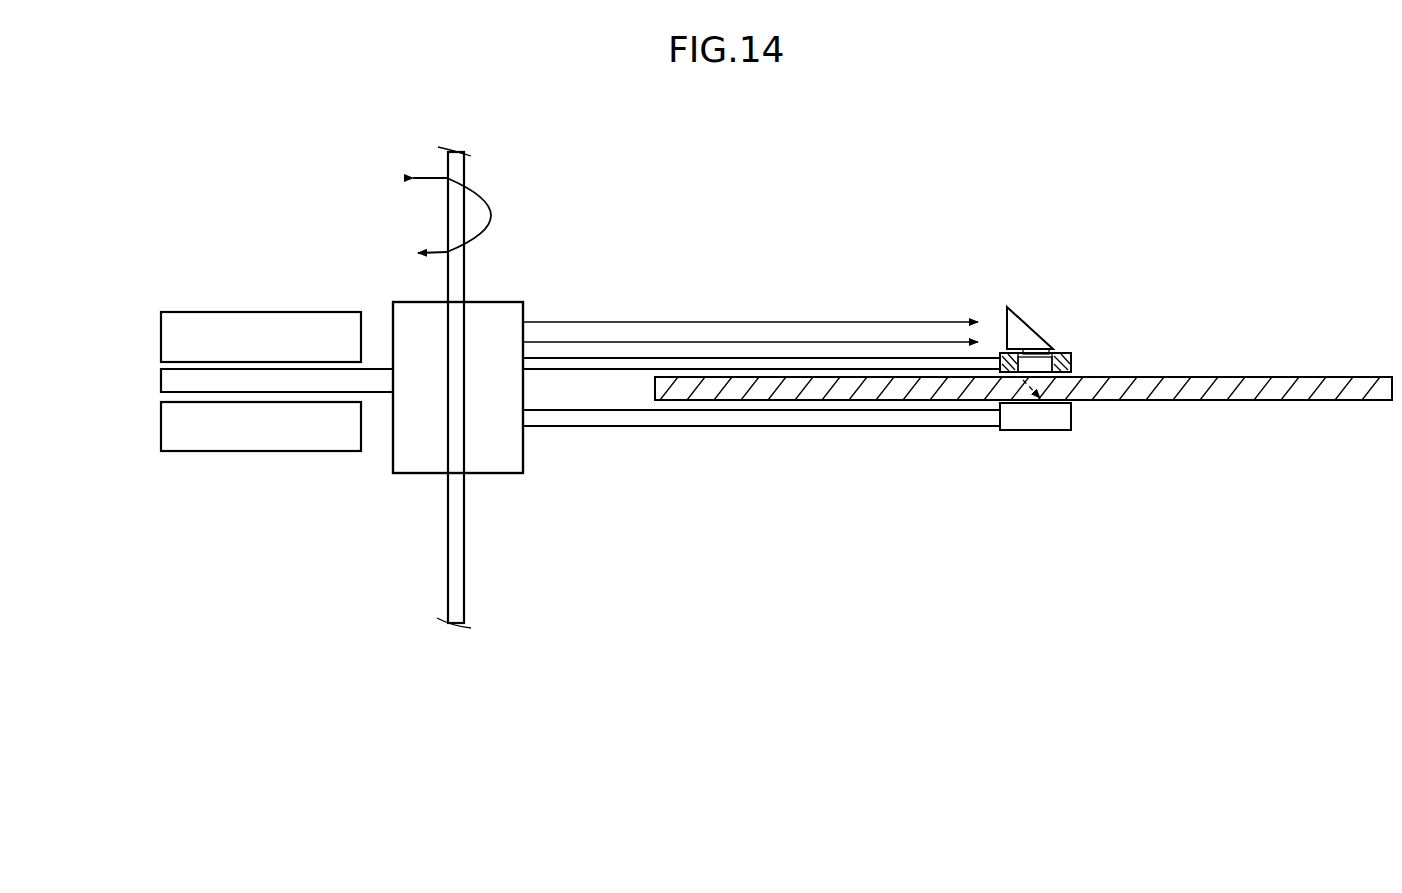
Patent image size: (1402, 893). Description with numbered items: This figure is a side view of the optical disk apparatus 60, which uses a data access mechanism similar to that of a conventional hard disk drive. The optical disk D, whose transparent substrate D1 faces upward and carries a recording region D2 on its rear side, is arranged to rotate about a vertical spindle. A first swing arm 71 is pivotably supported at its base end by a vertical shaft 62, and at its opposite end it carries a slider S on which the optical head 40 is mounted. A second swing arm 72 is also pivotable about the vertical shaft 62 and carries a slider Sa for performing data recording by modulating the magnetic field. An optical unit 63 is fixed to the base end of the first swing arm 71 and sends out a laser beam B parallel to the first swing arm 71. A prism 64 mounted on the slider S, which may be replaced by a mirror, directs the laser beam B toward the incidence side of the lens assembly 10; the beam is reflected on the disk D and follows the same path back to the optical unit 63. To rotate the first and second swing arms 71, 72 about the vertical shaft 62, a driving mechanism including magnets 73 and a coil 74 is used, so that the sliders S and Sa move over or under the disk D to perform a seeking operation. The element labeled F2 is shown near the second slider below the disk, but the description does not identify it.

The optical disk apparatus 60 is at (914, 236).
The vertical shaft 62 is at (466, 172).
The optical unit 63 is at (508, 470).
The prism 64 is at (1023, 340).
The lens assembly 10 is at (1035, 355).
The optical head 40 is at (1076, 344).
The first swing arm 71 is at (645, 357).
The second swing arm 72 is at (655, 428).
The magnets 73 is at (255, 312).
The coil 74 is at (161, 376).
The laser beam B is at (765, 320).
The slider S is at (1078, 360).
The slider Sa is at (1035, 420).
The focus element F2 is at (1040, 397).
The optical disk D is at (1255, 376).
The transparent substrate D1 is at (1305, 382).
The recording region D2 is at (1195, 400).